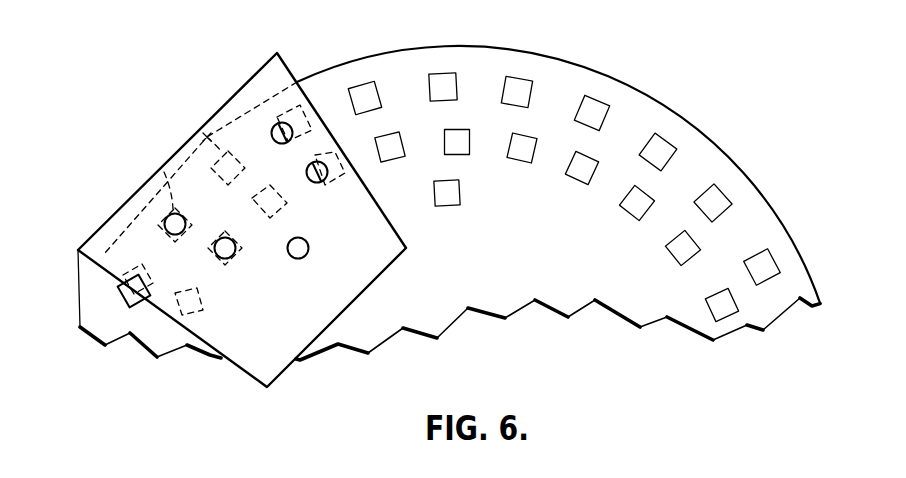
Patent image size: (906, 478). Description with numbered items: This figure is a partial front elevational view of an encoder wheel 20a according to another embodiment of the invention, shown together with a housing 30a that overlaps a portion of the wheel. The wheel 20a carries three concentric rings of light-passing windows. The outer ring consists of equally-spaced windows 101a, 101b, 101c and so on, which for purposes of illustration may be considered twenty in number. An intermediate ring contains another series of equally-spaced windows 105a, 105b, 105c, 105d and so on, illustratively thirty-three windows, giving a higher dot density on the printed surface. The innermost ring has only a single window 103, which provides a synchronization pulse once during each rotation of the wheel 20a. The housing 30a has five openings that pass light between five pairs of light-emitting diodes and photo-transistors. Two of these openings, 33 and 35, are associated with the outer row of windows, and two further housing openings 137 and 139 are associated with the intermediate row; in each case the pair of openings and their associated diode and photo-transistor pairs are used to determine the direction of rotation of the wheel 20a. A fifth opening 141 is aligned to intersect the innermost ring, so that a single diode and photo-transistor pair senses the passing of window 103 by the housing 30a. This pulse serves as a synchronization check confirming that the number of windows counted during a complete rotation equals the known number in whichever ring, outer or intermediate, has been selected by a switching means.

The wheel 20a is at (592, 68).
The housing 30a is at (393, 268).
The opening 33 is at (166, 219).
The opening 35 is at (276, 128).
The window 101a is at (164, 172).
The window 101b is at (205, 135).
The window 101c is at (299, 104).
The window 103 is at (444, 206).
The window 105a is at (182, 315).
The window 105b is at (238, 251).
The window 105c is at (284, 212).
The window 105d is at (326, 185).
The housing opening 137 is at (223, 258).
The housing opening 139 is at (307, 172).
The opening 141 is at (306, 257).